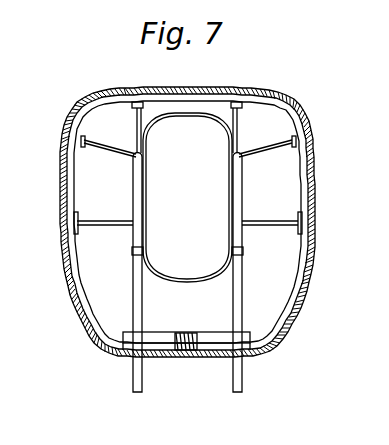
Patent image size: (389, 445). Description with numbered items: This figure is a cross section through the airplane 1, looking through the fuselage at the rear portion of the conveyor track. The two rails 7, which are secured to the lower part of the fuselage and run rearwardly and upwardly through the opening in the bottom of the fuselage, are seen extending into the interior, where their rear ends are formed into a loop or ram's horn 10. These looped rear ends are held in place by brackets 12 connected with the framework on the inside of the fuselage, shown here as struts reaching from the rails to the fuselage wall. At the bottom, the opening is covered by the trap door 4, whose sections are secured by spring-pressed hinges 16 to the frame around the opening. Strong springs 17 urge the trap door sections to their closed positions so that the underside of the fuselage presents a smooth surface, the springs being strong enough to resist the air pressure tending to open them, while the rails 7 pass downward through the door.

The airplane 1 is at (75, 134).
The trap door 4 is at (261, 359).
The rails 7 is at (143, 390).
The loop or ram's horn 10 is at (142, 191).
The brackets 12 is at (121, 155).
The spring-pressed hinges 16 is at (166, 333).
The springs 17 is at (190, 334).